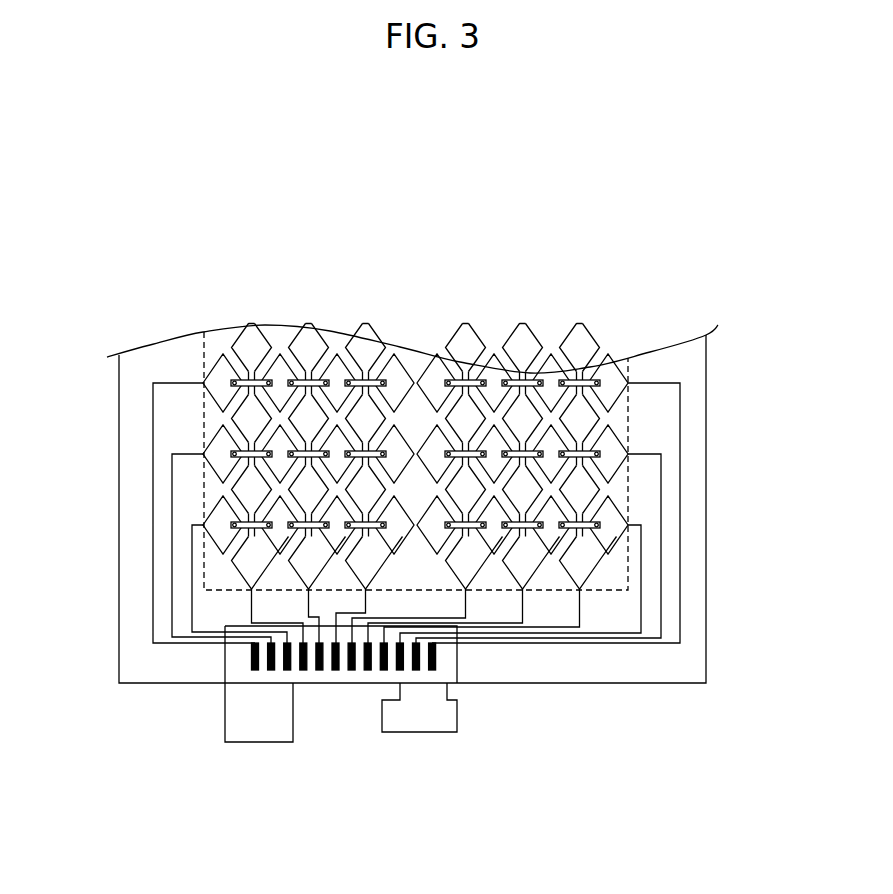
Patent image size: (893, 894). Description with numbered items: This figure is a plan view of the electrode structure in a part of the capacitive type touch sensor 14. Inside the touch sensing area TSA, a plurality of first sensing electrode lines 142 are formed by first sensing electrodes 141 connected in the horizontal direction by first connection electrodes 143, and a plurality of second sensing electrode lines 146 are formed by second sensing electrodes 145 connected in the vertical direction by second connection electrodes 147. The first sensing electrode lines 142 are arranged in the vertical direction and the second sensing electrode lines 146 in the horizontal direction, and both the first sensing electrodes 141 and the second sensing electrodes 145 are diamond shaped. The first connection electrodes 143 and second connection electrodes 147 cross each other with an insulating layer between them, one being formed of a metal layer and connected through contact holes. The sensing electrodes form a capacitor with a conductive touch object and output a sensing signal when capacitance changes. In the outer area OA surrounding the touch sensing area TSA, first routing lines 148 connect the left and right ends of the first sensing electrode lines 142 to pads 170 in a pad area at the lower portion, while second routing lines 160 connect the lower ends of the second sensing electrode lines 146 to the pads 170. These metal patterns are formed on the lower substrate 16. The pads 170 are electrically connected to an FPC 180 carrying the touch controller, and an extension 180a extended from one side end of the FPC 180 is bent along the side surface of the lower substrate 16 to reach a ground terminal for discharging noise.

The capacitive type touch sensor 14 is at (160, 300).
The lower substrate 16 is at (119, 482).
The first sensing electrode 141 is at (214, 370).
The first sensing electrode line 142 is at (252, 290).
The first connection electrode 143 is at (239, 358).
The second sensing electrode 145 is at (312, 345).
The second sensing electrode line 146 is at (386, 290).
The second connection electrode 147 is at (318, 378).
The first routing line 148 is at (160, 383).
The second routing line 160 is at (580, 618).
The pad 170 is at (320, 672).
The FPC 180 is at (225, 718).
The extension 180a is at (457, 712).
The touch sensing area TSA is at (630, 431).
The outer area OA is at (692, 516).